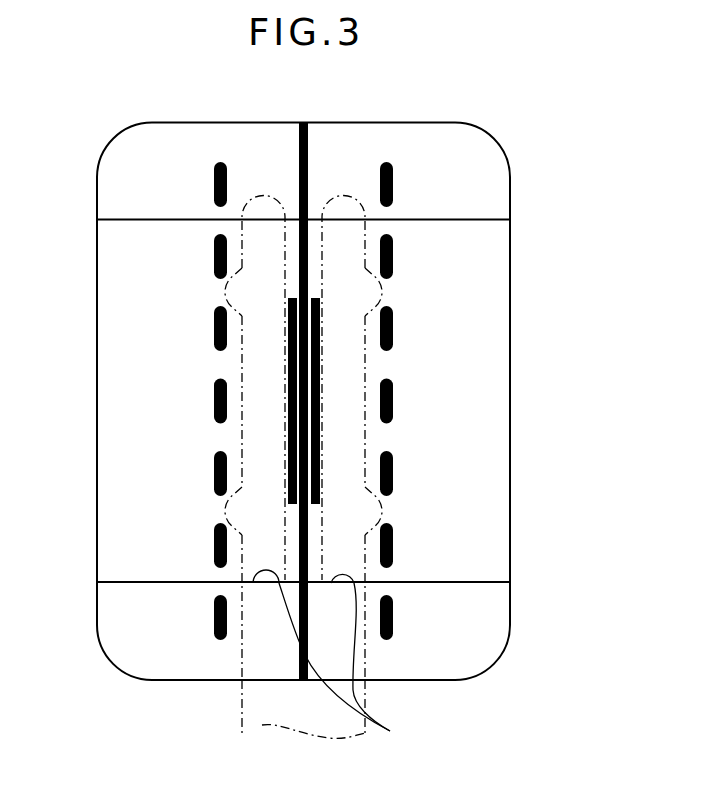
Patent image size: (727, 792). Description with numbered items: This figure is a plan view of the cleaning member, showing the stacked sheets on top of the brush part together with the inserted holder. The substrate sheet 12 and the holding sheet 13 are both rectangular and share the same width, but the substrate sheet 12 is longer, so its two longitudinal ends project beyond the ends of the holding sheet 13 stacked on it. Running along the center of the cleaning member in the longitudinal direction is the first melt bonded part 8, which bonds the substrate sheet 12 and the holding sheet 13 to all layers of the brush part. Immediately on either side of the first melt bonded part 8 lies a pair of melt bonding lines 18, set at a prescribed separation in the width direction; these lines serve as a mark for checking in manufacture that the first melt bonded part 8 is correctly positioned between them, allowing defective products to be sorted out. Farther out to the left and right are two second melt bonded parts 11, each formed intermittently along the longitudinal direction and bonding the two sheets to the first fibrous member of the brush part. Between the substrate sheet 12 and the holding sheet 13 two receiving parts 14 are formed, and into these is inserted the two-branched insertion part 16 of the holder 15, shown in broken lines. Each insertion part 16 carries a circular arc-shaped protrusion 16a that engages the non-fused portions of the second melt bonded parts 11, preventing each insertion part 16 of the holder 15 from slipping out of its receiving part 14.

The first melt bonded part 8 is at (308, 157).
The second melt bonded parts 11 is at (215, 262).
The substrate sheet 12 is at (485, 197).
The holding sheet 13 is at (488, 565).
The receiving part 14 is at (339, 657).
The holder 15 is at (262, 725).
The insertion part 16 is at (253, 422).
The circular arc-shaped protrusion 16a is at (382, 298).
The melt bonding lines 18 is at (288, 440).